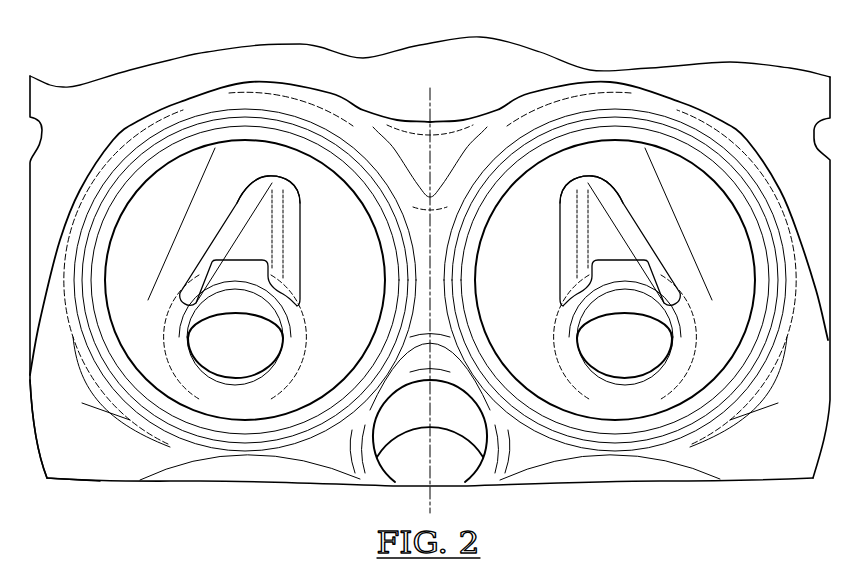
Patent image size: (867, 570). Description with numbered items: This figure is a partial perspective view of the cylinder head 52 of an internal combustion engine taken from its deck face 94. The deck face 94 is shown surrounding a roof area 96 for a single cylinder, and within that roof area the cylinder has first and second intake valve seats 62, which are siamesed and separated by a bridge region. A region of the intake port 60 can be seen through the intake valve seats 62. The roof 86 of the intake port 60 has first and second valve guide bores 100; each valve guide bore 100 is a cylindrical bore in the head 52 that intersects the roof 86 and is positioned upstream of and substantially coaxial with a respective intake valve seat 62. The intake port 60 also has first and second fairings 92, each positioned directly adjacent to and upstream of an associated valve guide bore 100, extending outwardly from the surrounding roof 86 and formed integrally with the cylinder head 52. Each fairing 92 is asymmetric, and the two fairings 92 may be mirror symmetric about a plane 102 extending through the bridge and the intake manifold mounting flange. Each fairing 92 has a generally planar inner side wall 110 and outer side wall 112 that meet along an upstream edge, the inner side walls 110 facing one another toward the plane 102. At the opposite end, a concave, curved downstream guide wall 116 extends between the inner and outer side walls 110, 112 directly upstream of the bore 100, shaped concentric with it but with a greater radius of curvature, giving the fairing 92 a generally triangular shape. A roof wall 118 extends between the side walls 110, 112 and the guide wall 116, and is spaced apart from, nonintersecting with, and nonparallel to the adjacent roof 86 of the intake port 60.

The deck face 94 is at (63, 110).
The intake port 60 is at (163, 195).
The roof 86 is at (430, 271).
The intake valve seat 62 is at (332, 397).
The outer side wall 112 is at (241, 206).
The fairing 92 is at (256, 219).
The roof wall 118 is at (273, 188).
The inner side wall 110 is at (280, 216).
The valve guide bore 100 is at (220, 303).
The downstream guide wall 116 is at (243, 272).
The plane 102 is at (432, 103).
The roof area 96 is at (70, 450).
The cylinder head 52 is at (112, 452).